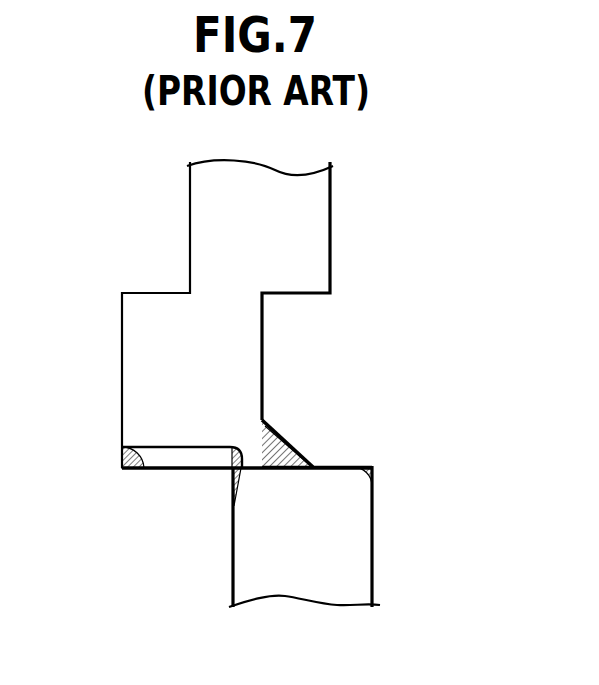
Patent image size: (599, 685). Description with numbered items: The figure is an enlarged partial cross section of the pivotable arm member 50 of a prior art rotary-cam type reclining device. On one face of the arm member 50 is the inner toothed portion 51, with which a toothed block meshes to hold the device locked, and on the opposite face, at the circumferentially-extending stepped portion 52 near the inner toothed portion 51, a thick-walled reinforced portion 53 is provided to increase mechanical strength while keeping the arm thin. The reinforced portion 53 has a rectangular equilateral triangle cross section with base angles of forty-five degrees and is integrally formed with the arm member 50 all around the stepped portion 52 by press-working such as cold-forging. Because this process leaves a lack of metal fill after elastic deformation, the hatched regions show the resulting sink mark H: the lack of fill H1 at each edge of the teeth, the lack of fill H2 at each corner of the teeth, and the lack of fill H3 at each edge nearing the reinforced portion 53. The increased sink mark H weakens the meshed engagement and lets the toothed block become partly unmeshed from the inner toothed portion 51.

The arm member 50 is at (210, 209).
The inner toothed portion 51 is at (193, 463).
The circumferentially-extending stepped portion 52 is at (272, 470).
The reinforced portion 53 is at (283, 449).
The sink mark H is at (122, 472).
The lack of fill at each edge of teeth H1 is at (122, 457).
The lack of fill at each corner of teeth H2 is at (231, 476).
The lack of fill at edge nearing reinforced portion H3 is at (373, 472).